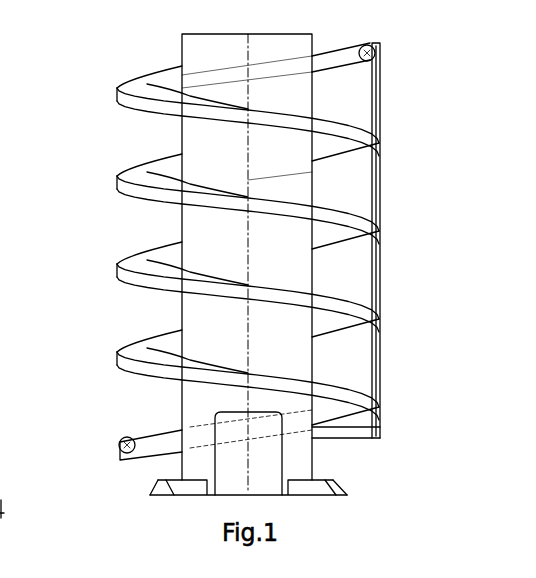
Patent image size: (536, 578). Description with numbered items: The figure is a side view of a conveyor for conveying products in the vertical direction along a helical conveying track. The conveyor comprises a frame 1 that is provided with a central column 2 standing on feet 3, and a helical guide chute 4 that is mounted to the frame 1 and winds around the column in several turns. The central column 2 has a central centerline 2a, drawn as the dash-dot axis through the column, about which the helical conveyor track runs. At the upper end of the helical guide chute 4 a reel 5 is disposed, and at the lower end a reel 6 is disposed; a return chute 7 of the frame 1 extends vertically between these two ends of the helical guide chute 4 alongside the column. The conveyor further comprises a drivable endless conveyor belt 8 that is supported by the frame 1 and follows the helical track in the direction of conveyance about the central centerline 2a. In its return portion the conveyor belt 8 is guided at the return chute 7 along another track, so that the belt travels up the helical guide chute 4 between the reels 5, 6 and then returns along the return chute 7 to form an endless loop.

The frame 1 is at (336, 34).
The central column 2 is at (182, 53).
The central centerline 2a is at (312, 172).
The feet 3 is at (158, 481).
The helical guide chute 4 is at (118, 97).
The reel 5 is at (378, 55).
The reel 6 is at (120, 443).
The return chute 7 is at (383, 103).
The endless conveyor belt 8 is at (128, 266).